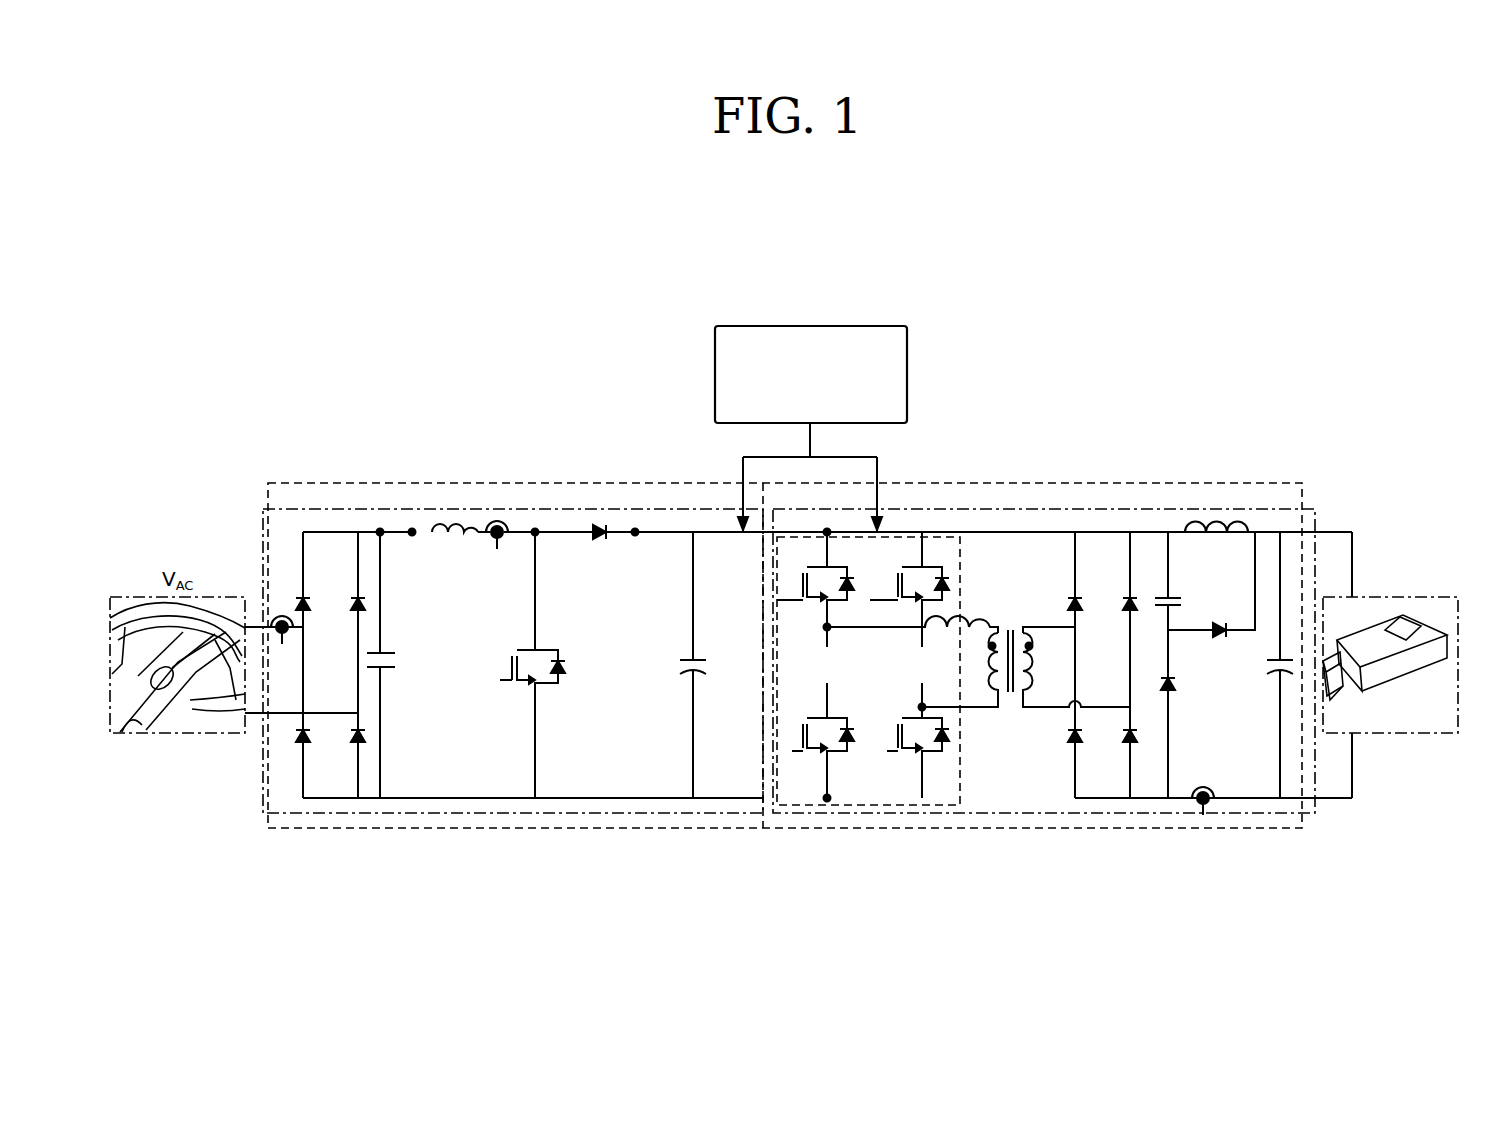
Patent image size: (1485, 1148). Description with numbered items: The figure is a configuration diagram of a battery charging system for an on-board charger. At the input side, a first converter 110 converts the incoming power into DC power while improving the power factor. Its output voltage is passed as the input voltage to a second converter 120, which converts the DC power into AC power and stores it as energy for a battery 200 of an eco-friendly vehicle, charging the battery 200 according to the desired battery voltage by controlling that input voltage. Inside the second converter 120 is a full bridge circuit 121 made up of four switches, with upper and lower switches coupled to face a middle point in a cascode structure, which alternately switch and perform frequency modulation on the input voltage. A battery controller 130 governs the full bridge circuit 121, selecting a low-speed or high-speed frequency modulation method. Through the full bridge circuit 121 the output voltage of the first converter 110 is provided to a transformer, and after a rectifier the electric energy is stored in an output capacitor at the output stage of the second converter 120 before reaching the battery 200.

The first converter 110 is at (523, 515).
The second converter 120 is at (1022, 515).
The full bridge circuit 121 is at (930, 795).
The battery controller 130 is at (752, 326).
The battery 200 is at (1384, 560).